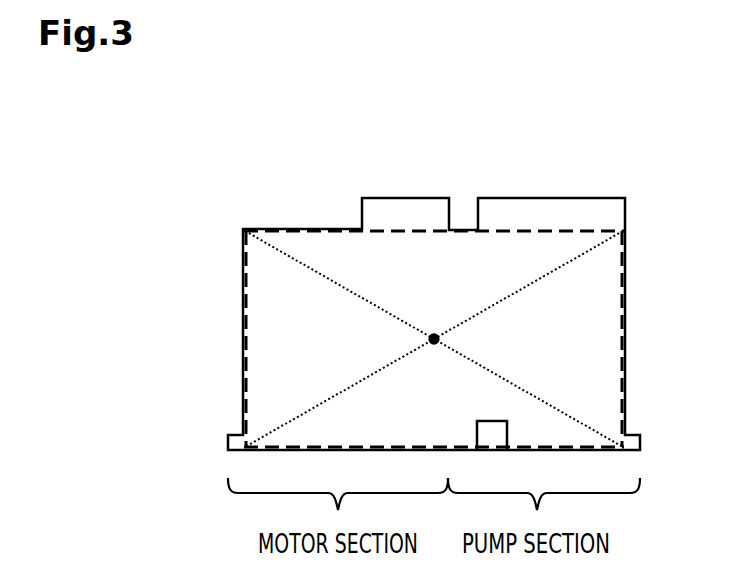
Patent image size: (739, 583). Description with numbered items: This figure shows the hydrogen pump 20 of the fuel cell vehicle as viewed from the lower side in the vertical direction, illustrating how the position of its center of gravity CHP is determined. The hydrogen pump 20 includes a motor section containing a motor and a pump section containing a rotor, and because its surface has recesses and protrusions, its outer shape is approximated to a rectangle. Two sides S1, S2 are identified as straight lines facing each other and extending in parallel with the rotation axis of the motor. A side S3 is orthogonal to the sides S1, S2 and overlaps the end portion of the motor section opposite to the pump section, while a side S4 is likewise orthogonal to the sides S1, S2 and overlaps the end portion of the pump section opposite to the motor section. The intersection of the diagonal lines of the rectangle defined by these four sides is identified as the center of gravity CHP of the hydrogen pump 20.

The hydrogen pump 20 is at (452, 146).
The side S1 is at (280, 226).
The side S2 is at (252, 460).
The side S3 is at (233, 312).
The side S4 is at (630, 305).
The center of gravity CHP is at (410, 340).